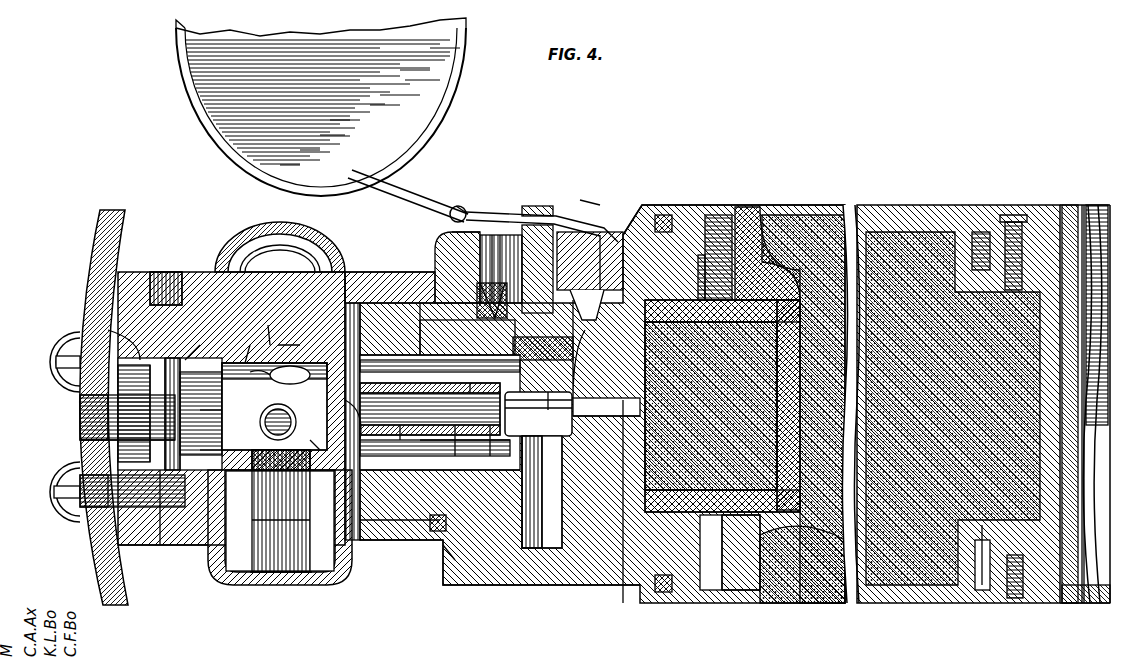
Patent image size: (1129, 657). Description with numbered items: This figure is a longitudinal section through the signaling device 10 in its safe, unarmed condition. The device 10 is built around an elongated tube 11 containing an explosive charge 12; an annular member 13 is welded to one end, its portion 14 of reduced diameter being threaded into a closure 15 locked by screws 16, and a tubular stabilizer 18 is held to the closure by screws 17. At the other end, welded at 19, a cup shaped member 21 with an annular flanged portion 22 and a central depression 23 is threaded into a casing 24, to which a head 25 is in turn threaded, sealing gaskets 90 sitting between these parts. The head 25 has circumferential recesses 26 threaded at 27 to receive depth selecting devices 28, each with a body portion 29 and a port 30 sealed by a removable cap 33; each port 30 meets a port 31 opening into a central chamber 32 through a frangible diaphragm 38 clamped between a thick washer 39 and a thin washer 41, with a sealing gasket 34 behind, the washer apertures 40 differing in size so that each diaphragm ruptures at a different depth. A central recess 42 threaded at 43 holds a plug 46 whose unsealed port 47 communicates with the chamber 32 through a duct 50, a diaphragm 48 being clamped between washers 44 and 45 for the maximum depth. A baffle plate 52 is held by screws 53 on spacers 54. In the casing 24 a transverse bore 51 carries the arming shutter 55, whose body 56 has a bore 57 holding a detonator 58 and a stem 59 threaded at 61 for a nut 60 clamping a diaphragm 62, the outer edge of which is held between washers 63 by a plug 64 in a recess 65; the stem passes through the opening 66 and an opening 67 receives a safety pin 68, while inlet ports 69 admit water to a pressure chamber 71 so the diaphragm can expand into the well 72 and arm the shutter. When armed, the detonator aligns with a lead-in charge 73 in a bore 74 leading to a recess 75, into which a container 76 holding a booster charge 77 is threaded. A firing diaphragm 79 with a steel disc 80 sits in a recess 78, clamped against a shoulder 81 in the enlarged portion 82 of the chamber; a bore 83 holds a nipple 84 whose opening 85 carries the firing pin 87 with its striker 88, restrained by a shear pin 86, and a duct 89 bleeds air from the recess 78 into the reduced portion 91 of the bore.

The device 10 is at (645, 203).
The elongated tube 11 is at (808, 215).
The explosive charge 12 is at (850, 603).
The annular member 13 is at (925, 212).
The portion of reduced diameter 14 is at (982, 592).
The closure 15 is at (1062, 212).
The screws 16 is at (1013, 222).
The screws 17 is at (1015, 600).
The tubular stabilizer 18 is at (1090, 606).
The weld 19 is at (760, 215).
The cup shaped member 21 is at (748, 207).
The annular flanged portion 22 is at (698, 603).
The depression 23 is at (798, 560).
The casing 24 is at (541, 577).
The head 25 is at (190, 272).
The recesses 26 is at (378, 530).
The threads 27 is at (192, 545).
The depth selecting device 28 is at (210, 583).
The body portion 29 is at (280, 248).
The port 30 is at (288, 588).
The port 31 is at (256, 425).
The central chamber 32 is at (256, 342).
The removable cap 33 is at (250, 232).
The sealing gasket 34 is at (314, 440).
The frangible diaphragm 38 is at (281, 511).
The thick washer 39 is at (300, 480).
The apertures 40 is at (298, 425).
The thin washer 41 is at (281, 515).
The recess 42 is at (158, 545).
The threads 43 is at (108, 330).
The washer 44 is at (223, 443).
The washer 45 is at (100, 398).
The plug 46 is at (120, 448).
The port 47 is at (120, 418).
The frangible diaphragm 48 is at (200, 345).
The duct 50 is at (222, 410).
The transverse bore 51 is at (590, 390).
The baffle plate 52 is at (115, 605).
The screws 53 is at (58, 350).
The spacers 54 is at (108, 325).
The arming shutter 55 is at (575, 348).
The body 56 is at (480, 325).
The bore 57 is at (524, 400).
The detonator 58 is at (549, 410).
The stem 59 is at (535, 225).
The nut 60 is at (595, 235).
The threads 61 is at (510, 235).
The diaphragm 62 is at (507, 305).
The washers 63 is at (435, 262).
The plug 64 is at (450, 212).
The recess 65 is at (452, 240).
The opening 66 is at (585, 215).
The opening 67 is at (545, 206).
The safety pin 68 is at (468, 206).
The inlet ports 69 is at (492, 235).
The pressure chamber 71 is at (590, 290).
The well 72 is at (522, 303).
The lead-in charge 73 is at (586, 416).
The bore 74 is at (604, 416).
The recess 75 is at (640, 555).
The container 76 is at (720, 215).
The booster charge 77 is at (760, 575).
The recess 78 is at (405, 540).
The firing diaphragm 79 is at (352, 460).
The steel disc 80 is at (425, 448).
The shoulder 81 is at (350, 272).
The enlarged portion 82 is at (346, 355).
The bore 83 is at (429, 331).
The nipple 84 is at (447, 383).
The opening 85 is at (472, 383).
The shear pin 86 is at (430, 425).
The firing pin 87 is at (462, 440).
The striker 88 is at (492, 440).
The duct 89 is at (545, 470).
The sealing gaskets 90 is at (452, 560).
The reduced portion 91 is at (548, 535).